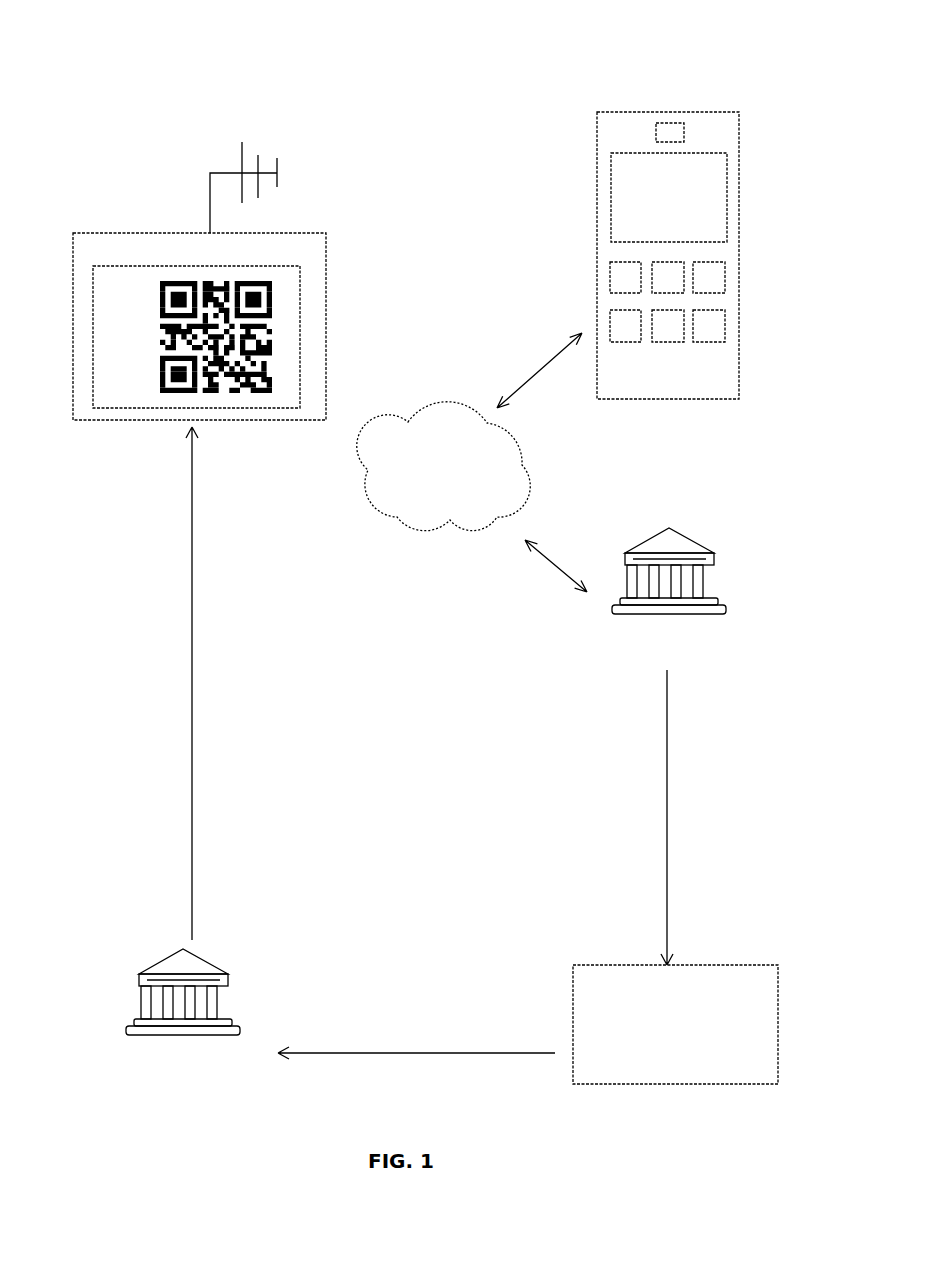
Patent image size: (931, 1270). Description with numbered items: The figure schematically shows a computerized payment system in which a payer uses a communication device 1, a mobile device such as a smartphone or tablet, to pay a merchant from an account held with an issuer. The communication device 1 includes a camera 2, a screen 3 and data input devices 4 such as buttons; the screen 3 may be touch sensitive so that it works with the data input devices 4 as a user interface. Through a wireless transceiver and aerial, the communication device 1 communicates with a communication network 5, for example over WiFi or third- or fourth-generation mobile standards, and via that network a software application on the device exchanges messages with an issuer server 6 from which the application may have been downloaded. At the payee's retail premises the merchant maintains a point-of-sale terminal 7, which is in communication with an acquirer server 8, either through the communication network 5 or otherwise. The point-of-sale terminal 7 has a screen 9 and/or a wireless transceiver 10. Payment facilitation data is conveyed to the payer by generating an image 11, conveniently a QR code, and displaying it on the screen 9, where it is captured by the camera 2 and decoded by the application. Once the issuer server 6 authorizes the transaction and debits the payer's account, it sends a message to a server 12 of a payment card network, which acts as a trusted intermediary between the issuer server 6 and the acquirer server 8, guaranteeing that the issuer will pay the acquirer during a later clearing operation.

The communication device 1 is at (642, 112).
The camera 2 is at (668, 122).
The screen 3 is at (710, 227).
The data input devices 4 is at (750, 373).
The communication network 5 is at (444, 466).
The issuer server 6 is at (625, 620).
The point-of-sale terminal 7 is at (150, 232).
The acquirer server 8 is at (213, 1045).
The screen 9 is at (288, 263).
The wireless transceiver 10 is at (276, 122).
The image 11 is at (270, 330).
The server of a payment card network 12 is at (675, 1024).